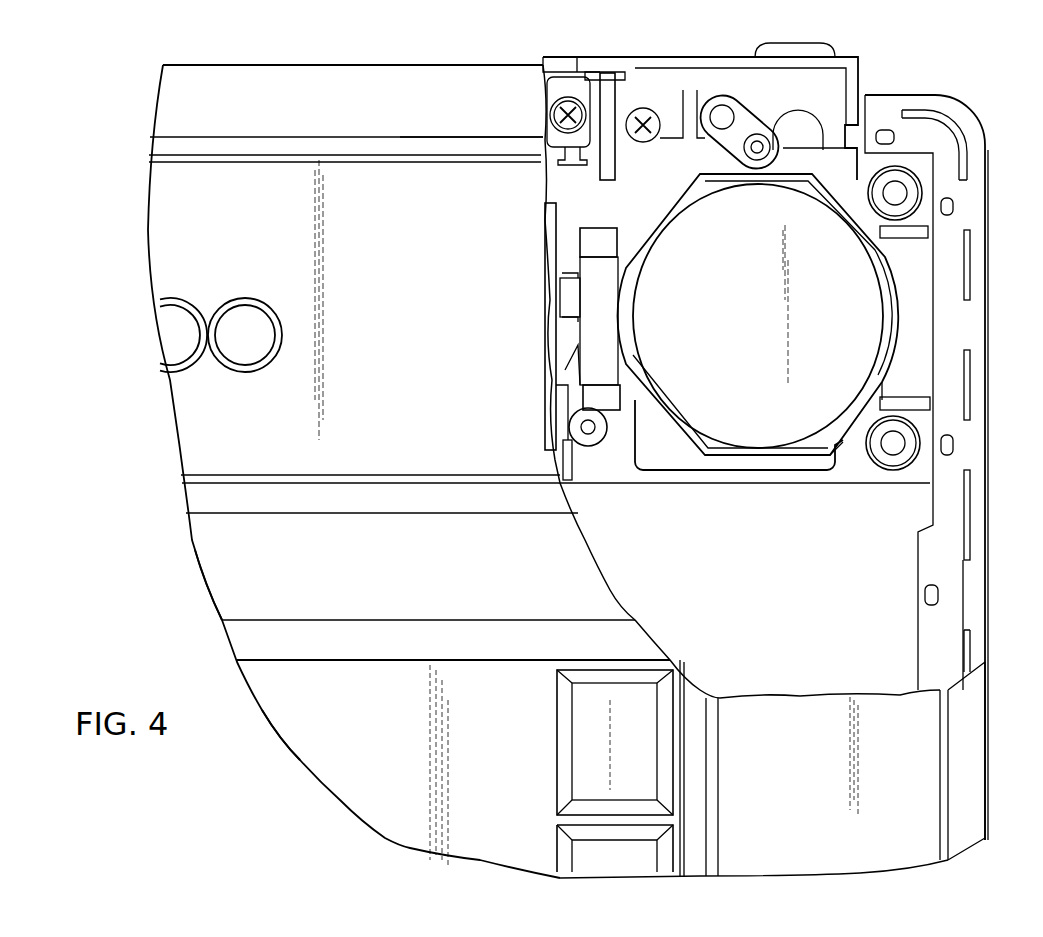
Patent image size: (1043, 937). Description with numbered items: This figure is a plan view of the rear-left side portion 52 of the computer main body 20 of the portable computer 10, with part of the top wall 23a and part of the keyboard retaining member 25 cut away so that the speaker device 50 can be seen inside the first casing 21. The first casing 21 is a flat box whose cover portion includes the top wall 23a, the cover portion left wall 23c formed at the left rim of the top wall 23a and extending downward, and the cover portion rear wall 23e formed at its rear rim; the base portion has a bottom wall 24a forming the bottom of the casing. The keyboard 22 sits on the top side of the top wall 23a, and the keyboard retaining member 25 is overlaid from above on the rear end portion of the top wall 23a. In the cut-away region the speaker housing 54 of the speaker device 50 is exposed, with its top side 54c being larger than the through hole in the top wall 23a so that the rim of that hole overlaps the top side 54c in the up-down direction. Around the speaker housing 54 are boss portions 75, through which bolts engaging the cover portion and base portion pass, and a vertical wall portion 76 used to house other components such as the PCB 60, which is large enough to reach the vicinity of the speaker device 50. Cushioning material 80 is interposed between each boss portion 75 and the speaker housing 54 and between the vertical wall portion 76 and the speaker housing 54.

The portable computer 10 is at (145, 215).
The computer main body 20 is at (175, 108).
The first casing 21 is at (260, 62).
The keyboard 22 is at (308, 735).
The top wall 23a is at (215, 558).
The cover portion left wall 23c is at (990, 760).
The cover portion rear wall 23e is at (338, 64).
The bottom wall 24a is at (650, 160).
The keyboard retaining member 25 is at (432, 95).
The speaker device 50 is at (865, 318).
The rear-left side portion 52 is at (695, 150).
The speaker housing 54 is at (890, 295).
The top side of speaker housing 54c is at (850, 370).
The PCB 60 is at (893, 583).
The boss portion 75 is at (905, 180).
The vertical wall portion 76 is at (555, 270).
The cushioning material 80 is at (910, 228).